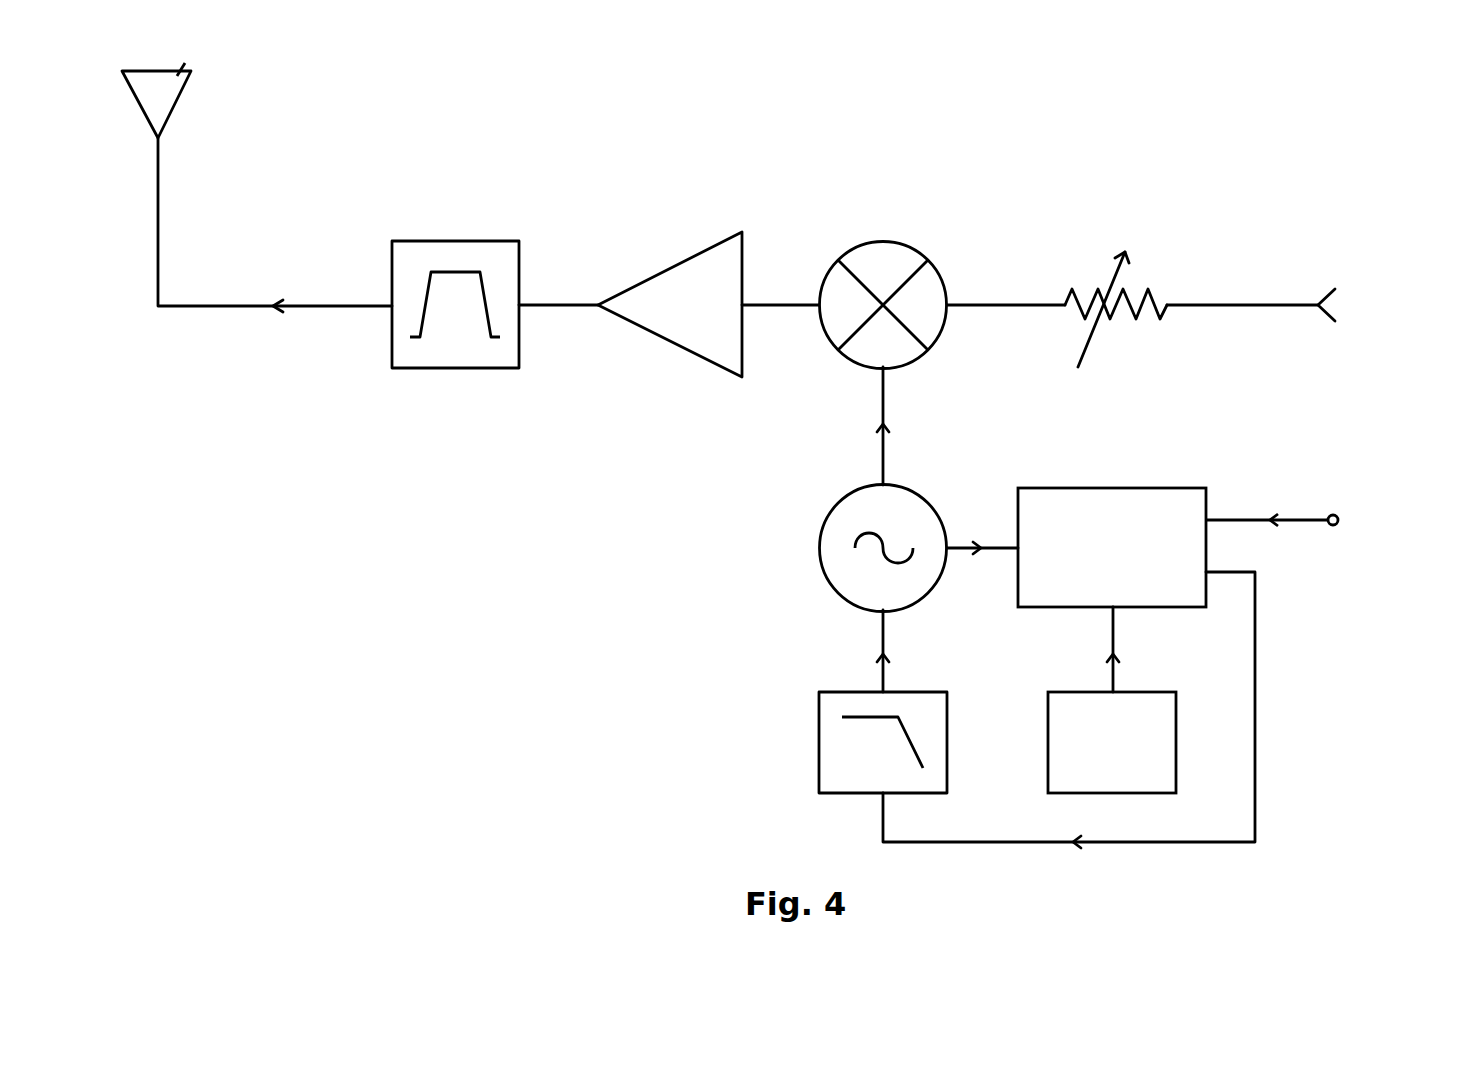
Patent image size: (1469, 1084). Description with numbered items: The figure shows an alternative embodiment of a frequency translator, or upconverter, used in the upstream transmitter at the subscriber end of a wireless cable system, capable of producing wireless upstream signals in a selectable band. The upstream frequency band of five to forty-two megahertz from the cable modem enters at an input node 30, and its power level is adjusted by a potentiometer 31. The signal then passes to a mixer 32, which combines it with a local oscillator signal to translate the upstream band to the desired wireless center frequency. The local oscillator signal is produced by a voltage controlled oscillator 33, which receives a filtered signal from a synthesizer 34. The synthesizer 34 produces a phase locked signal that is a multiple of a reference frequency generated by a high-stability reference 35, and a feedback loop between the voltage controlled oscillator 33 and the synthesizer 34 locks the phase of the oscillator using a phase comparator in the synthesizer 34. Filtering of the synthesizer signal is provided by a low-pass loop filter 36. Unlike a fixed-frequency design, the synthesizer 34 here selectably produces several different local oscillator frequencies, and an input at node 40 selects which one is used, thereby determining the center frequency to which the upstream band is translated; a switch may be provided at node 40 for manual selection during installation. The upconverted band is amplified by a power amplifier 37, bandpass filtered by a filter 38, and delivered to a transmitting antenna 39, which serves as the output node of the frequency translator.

The input node 30 is at (1218, 305).
The potentiometer 31 is at (1140, 319).
The mixer 32 is at (884, 241).
The voltage controlled oscillator 33 is at (905, 486).
The synthesizer 34 is at (1145, 488).
The high-stability reference 35 is at (1145, 692).
The low-pass loop filter 36 is at (905, 692).
The power amplifier 37 is at (720, 237).
The filter 38 is at (494, 241).
The transmitting antenna 39 is at (188, 80).
The node 40 is at (1312, 520).